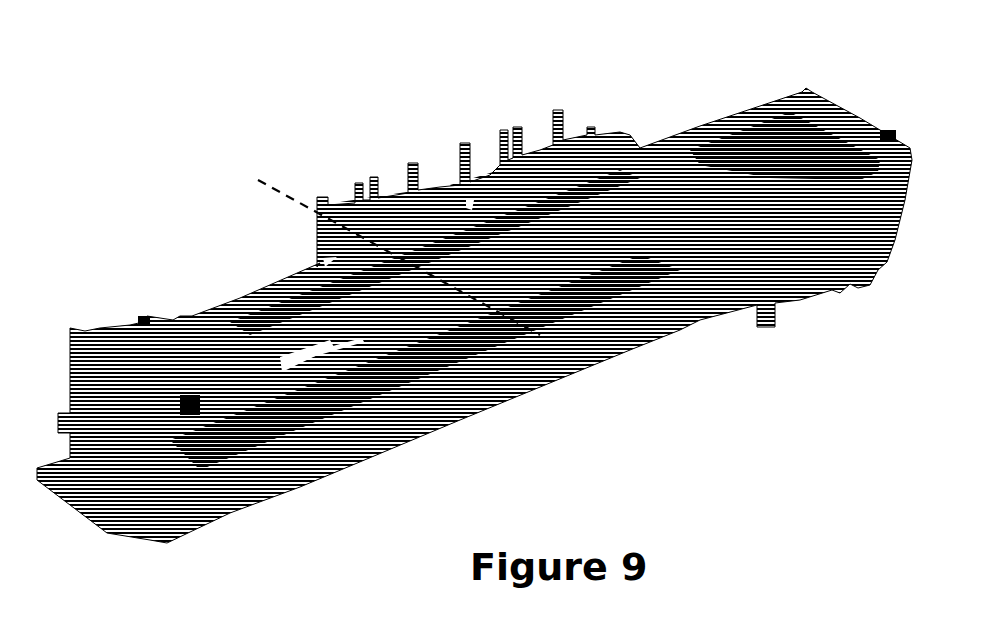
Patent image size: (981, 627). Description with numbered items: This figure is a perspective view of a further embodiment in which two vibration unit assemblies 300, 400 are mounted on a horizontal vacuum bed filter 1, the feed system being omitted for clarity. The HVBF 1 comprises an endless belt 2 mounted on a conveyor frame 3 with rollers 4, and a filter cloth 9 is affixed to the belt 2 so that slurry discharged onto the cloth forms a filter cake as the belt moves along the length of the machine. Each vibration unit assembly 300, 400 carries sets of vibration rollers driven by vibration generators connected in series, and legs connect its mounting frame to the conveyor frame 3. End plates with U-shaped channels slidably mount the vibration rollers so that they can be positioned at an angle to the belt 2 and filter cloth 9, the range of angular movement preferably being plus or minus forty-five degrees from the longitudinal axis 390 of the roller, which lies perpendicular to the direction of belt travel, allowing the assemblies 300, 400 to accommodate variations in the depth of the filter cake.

The horizontal vacuum bed filter 1 is at (302, 118).
The endless belt 2 is at (767, 112).
The conveyor frame 3 is at (387, 390).
The rollers 4 is at (158, 332).
The filter cloth 9 is at (290, 322).
The vibration unit assembly 300 is at (420, 150).
The longitudinal axis 390 is at (280, 193).
The vibration unit assembly 400 is at (514, 110).